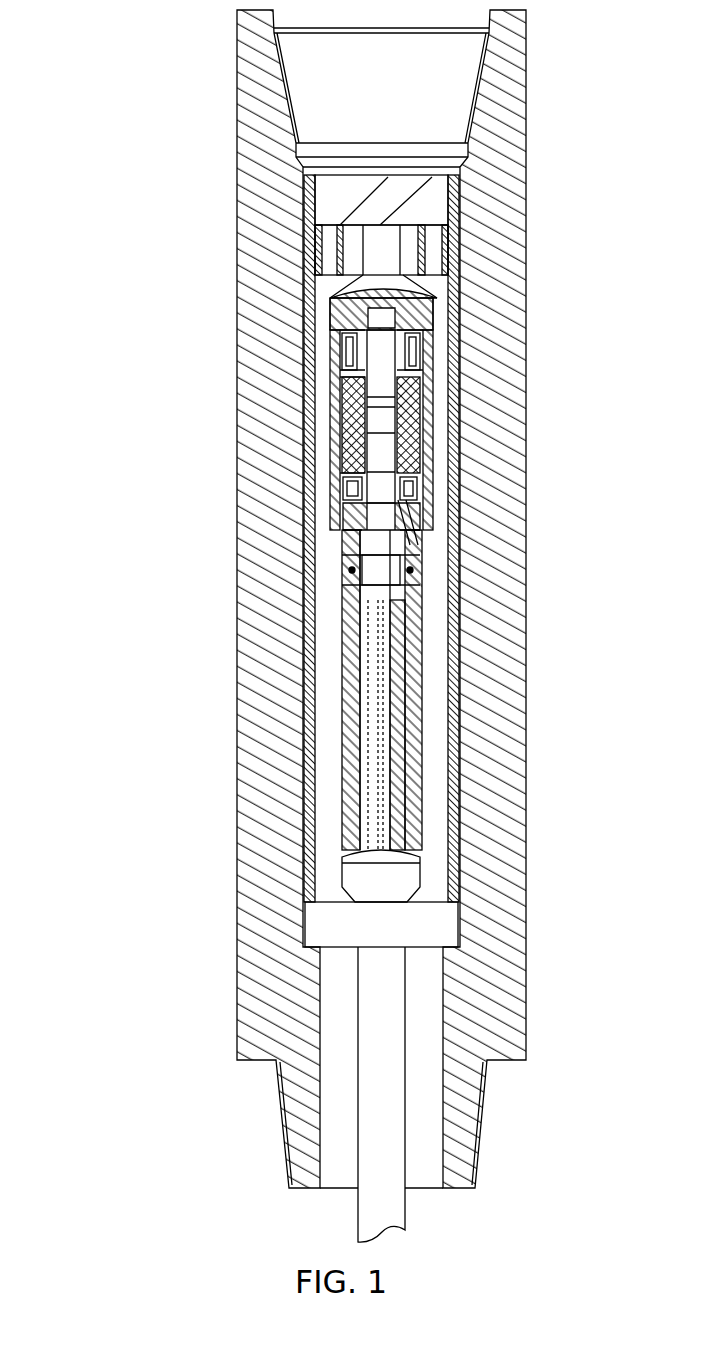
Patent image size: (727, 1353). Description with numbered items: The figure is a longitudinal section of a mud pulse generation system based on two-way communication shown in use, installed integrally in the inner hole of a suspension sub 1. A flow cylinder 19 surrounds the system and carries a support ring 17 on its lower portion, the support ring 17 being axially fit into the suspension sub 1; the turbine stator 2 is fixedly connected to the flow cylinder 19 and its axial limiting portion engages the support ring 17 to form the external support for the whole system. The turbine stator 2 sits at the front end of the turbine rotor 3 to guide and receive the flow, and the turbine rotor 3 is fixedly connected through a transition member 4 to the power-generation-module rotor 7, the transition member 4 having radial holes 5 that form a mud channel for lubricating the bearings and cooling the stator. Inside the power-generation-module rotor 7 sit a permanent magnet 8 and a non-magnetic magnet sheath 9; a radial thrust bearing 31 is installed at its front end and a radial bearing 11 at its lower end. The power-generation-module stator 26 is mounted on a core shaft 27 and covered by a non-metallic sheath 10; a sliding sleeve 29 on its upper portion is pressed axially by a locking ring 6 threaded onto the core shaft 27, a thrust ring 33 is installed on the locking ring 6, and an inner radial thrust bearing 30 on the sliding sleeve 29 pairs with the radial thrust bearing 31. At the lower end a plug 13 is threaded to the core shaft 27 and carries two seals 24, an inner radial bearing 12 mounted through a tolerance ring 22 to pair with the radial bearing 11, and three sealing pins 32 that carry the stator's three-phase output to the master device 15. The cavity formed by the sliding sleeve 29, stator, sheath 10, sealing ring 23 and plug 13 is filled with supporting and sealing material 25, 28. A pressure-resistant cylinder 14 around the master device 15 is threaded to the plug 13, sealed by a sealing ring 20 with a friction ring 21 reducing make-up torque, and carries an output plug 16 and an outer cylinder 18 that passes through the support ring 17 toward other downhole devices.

The suspension sub 1 is at (533, 110).
The turbine stator 2 is at (410, 200).
The turbine rotor 3 is at (428, 253).
The transition member 4 is at (437, 302).
The radial hole 5 is at (437, 322).
The locking ring 6 is at (440, 332).
The power-generation-module rotor 7 is at (440, 357).
The permanent magnet 8 is at (440, 398).
The magnet sheath 9 is at (440, 437).
The sheath 10 is at (440, 477).
The radial bearing 11 is at (440, 495).
The inner radial bearing 12 is at (440, 525).
The plug 13 is at (432, 545).
The pressure-resistant cylinder 14 is at (423, 618).
The master device 15 is at (388, 678).
The output plug 16 is at (395, 878).
The support ring 17 is at (405, 925).
The outer cylinder 18 is at (395, 1005).
The flow cylinder 19 is at (322, 903).
The sealing ring 20 is at (355, 600).
The friction ring 21 is at (350, 580).
The tolerance ring 22 is at (350, 537).
The sealing ring 23 is at (345, 510).
The seal 24 is at (340, 500).
The supporting and sealing material 25 is at (338, 484).
The power-generation-module stator 26 is at (338, 449).
The core shaft 27 is at (332, 416).
The supporting and sealing material 28 is at (332, 385).
The sliding sleeve 29 is at (332, 374).
The inner radial thrust bearing 30 is at (332, 364).
The radial thrust bearing 31 is at (332, 338).
The sealing pin 32 is at (352, 570).
The thrust ring 33 is at (332, 319).